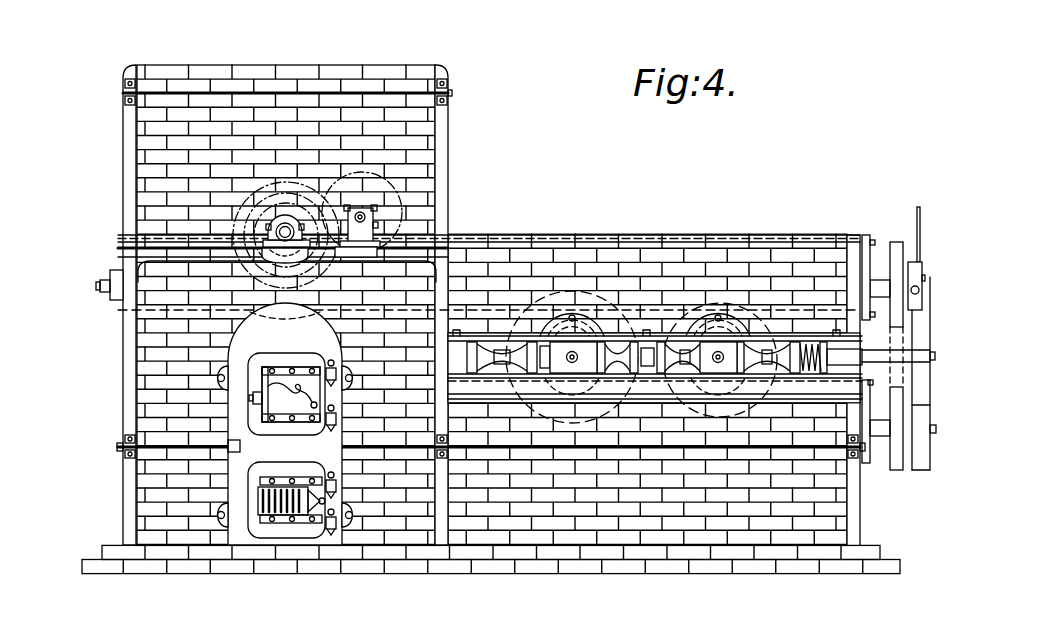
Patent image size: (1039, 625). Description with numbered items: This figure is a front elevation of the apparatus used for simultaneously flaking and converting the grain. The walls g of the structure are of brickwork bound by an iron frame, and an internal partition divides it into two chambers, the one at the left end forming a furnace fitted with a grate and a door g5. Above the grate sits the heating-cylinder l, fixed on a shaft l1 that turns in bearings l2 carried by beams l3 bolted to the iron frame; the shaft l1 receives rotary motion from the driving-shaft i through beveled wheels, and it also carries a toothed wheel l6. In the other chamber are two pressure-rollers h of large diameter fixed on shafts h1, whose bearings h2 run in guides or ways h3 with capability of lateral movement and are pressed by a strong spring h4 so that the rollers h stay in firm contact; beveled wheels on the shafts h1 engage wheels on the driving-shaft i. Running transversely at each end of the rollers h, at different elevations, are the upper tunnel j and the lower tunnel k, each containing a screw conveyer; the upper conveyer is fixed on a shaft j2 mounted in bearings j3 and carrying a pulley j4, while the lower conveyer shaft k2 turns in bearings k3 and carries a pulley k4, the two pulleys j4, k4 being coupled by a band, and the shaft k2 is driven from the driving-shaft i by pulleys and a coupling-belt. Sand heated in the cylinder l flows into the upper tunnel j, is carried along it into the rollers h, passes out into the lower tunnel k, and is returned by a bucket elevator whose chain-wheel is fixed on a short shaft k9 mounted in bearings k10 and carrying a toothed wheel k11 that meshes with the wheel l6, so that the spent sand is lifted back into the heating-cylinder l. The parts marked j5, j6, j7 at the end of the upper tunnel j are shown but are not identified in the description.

The walls g is at (165, 490).
The door g5 is at (262, 372).
The heating-cylinder l is at (310, 203).
The shaft of heating-cylinder l1 is at (278, 232).
The bearings l2 is at (283, 226).
The beams l3 is at (447, 244).
The toothed wheel l6 is at (330, 222).
The lower tunnel k is at (868, 462).
The shaft of lower screw conveyer k2 is at (936, 430).
The bearings k3 is at (882, 430).
The pulley k4 is at (903, 462).
The short shaft k9 is at (376, 210).
The bearings k10 is at (378, 222).
The toothed wheel k11 is at (374, 232).
The pressure-rollers h is at (525, 295).
The shafts of pressure-rollers h1 is at (578, 352).
The bearings h2 is at (803, 213).
The guides or ways h3 is at (668, 343).
The spring h4 is at (812, 335).
The driving-shaft i is at (933, 357).
The upper tunnel j is at (866, 252).
The shaft of upper screw conveyer j2 is at (960, 238).
The bearings j3 is at (915, 178).
The pulley j4 is at (900, 258).
The bracket j5 is at (920, 310).
The pivot j6 is at (925, 300).
The rod j7 is at (920, 244).